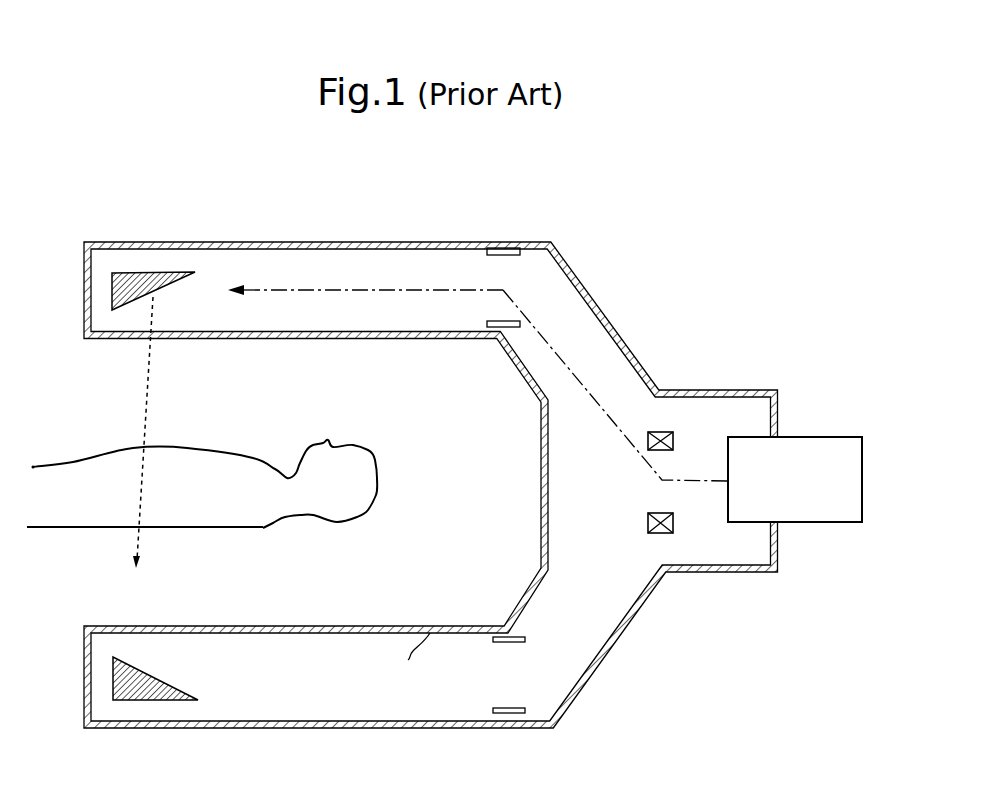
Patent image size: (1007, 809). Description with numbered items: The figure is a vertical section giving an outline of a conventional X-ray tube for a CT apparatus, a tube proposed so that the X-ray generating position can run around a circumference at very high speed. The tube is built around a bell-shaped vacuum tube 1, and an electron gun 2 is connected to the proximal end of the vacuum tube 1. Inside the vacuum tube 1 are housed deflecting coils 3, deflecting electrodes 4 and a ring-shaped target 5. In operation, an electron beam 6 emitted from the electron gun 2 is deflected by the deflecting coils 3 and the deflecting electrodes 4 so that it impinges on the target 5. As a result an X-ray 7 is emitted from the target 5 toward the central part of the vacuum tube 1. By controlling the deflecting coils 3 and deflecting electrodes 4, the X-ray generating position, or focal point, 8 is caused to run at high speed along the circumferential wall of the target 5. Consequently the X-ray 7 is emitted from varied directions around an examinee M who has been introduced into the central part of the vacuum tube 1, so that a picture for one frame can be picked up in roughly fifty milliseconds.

The vacuum tube 1 is at (303, 243).
The electron gun 2 is at (818, 437).
The deflecting coils 3 is at (667, 431).
The deflecting electrodes 4 is at (527, 247).
The ring-shaped target 5 is at (153, 271).
The electron beam 6 is at (319, 294).
The X-ray 7 is at (146, 410).
The X-ray generating position (focal point) 8 is at (150, 298).
The examinee M is at (220, 530).